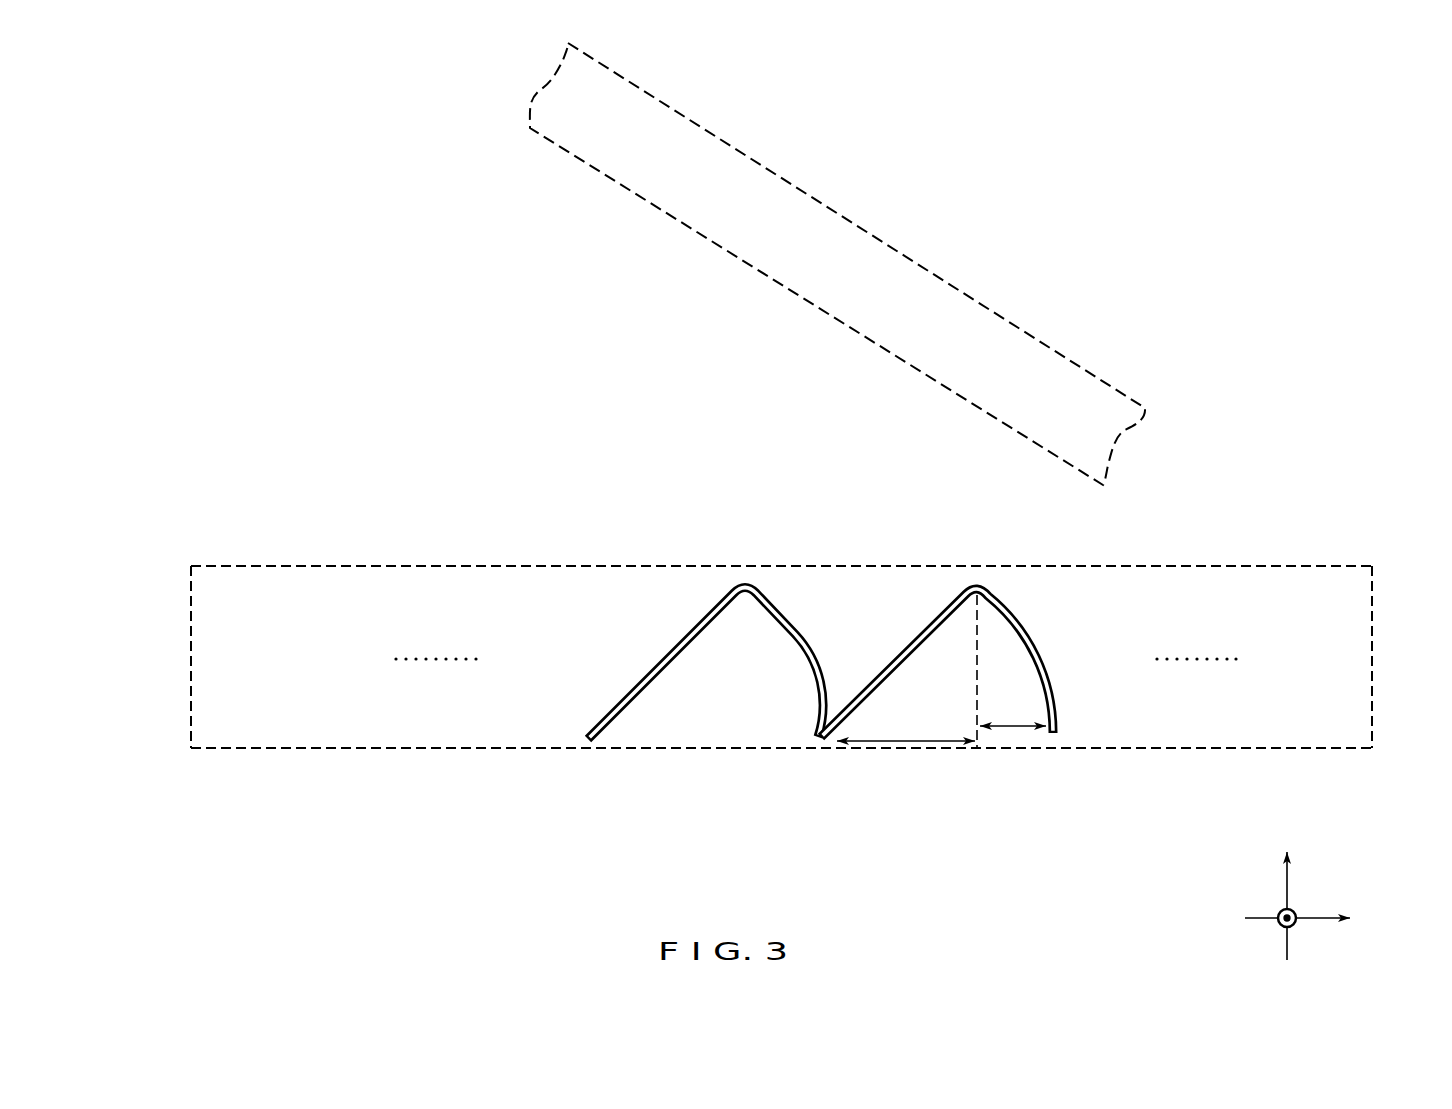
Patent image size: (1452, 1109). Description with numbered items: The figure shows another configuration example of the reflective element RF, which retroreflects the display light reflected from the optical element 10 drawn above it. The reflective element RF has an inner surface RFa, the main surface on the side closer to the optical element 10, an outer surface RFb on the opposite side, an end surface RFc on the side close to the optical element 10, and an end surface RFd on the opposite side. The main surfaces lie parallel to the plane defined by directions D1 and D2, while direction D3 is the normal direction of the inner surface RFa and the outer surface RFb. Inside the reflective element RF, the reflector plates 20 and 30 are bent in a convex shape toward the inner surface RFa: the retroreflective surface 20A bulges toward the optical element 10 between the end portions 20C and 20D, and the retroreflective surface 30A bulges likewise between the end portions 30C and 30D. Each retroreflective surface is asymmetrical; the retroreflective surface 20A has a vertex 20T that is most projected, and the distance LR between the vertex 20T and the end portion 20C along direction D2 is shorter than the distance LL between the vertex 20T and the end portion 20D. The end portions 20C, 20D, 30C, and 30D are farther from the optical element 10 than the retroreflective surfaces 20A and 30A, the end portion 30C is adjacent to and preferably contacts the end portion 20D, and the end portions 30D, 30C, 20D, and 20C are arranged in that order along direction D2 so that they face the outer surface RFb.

The optical element 10 is at (1028, 333).
The reflective element RF is at (768, 644).
The inner surface RFa is at (267, 557).
The outer surface RFb is at (273, 757).
The end surface RFc is at (1380, 631).
The end surface RFd is at (183, 638).
The reflector plate 20 is at (947, 671).
The retroreflective surface 20A is at (915, 616).
The end portion 20C is at (1051, 739).
The end portion 20D is at (816, 746).
The vertex 20T is at (983, 579).
The reflector plate 30 is at (691, 681).
The retroreflective surface 30A is at (680, 616).
The end portion 30C is at (806, 736).
The end portion 30D is at (581, 743).
The distance LL is at (903, 742).
The distance LR is at (1010, 728).
The direction D1 is at (1272, 908).
The direction D2 is at (1317, 919).
The direction D3 is at (1287, 891).